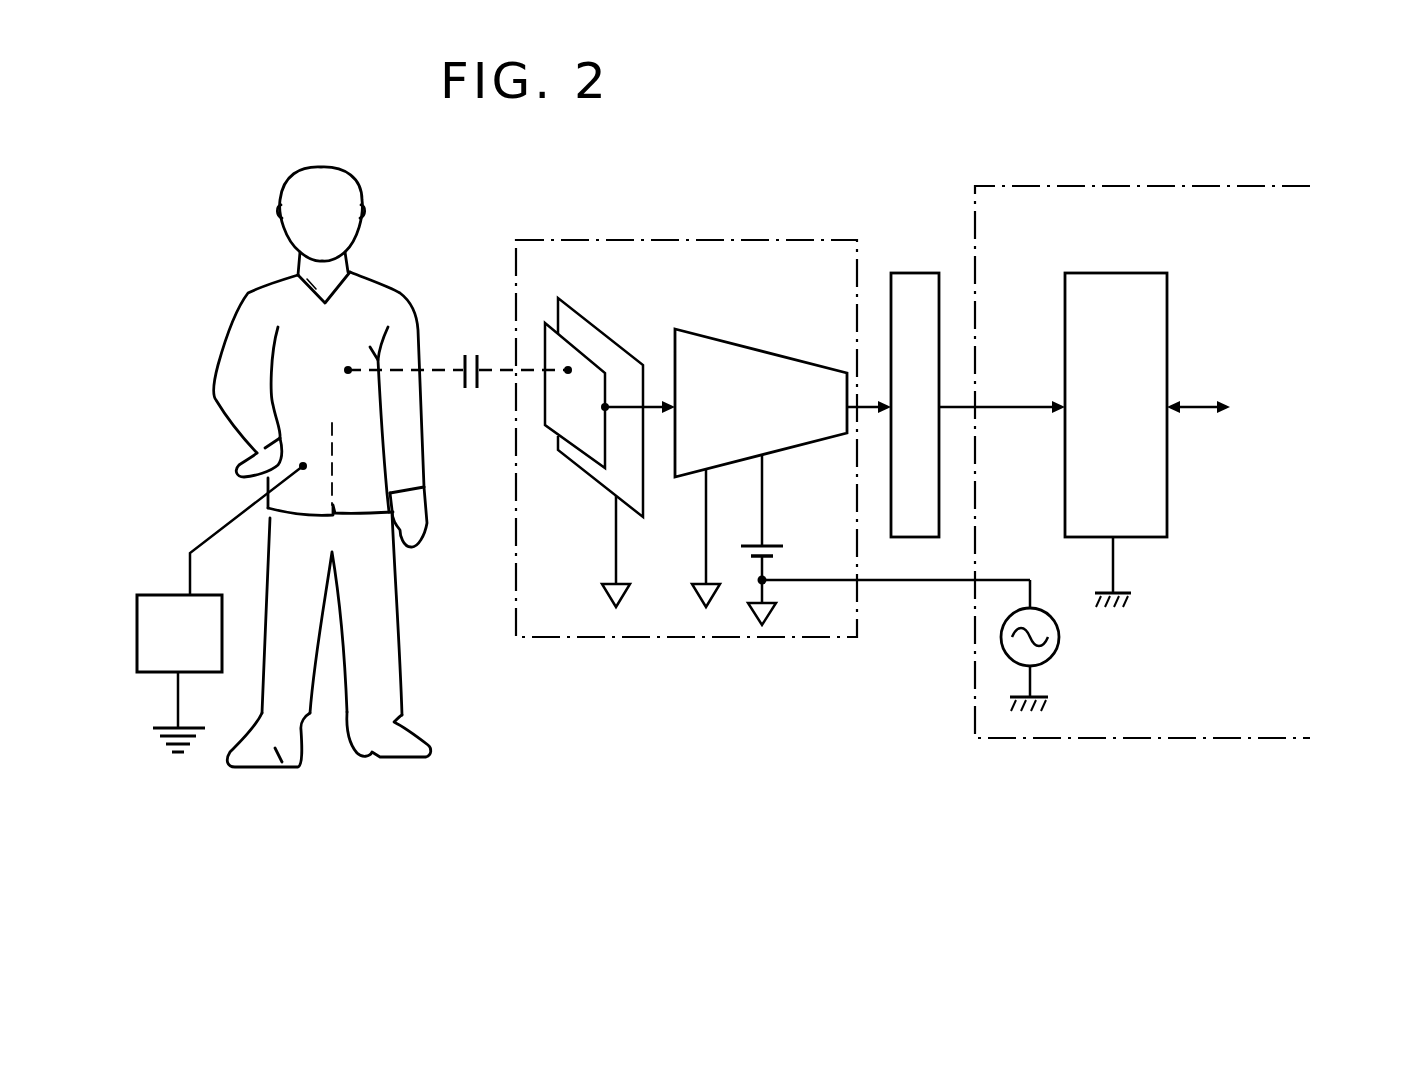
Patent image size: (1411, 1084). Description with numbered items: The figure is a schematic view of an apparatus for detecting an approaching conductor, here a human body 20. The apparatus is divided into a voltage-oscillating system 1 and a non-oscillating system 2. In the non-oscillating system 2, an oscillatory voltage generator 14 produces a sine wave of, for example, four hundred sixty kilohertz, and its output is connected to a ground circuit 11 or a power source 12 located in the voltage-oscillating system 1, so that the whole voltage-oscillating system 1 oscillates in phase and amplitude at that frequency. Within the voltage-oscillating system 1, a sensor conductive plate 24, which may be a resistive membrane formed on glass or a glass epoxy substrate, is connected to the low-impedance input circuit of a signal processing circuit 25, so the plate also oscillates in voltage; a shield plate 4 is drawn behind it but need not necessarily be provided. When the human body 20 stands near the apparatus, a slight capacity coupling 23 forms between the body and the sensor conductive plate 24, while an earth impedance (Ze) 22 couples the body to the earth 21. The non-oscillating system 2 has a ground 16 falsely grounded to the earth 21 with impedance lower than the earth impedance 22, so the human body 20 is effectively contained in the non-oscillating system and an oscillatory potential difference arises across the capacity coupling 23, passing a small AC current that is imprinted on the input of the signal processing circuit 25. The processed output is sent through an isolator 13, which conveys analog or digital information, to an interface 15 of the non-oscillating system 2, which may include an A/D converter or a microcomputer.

The voltage-oscillating system 1 is at (786, 226).
The non-oscillating system 2 is at (1042, 165).
The shield plate 4 is at (613, 356).
The ground circuit 11 is at (760, 626).
The power source 12 is at (776, 546).
The isolator 13 is at (905, 273).
The oscillatory voltage generator 14 is at (1052, 655).
The interface 15 is at (1137, 273).
The ground 16 is at (1124, 602).
The human body 20 is at (262, 296).
The earth 21 is at (190, 745).
The earth impedance (Ze) 22 is at (164, 597).
The capacity coupling 23 is at (468, 352).
The sensor conductive plate 24 is at (573, 355).
The signal processing circuit 25 is at (757, 349).